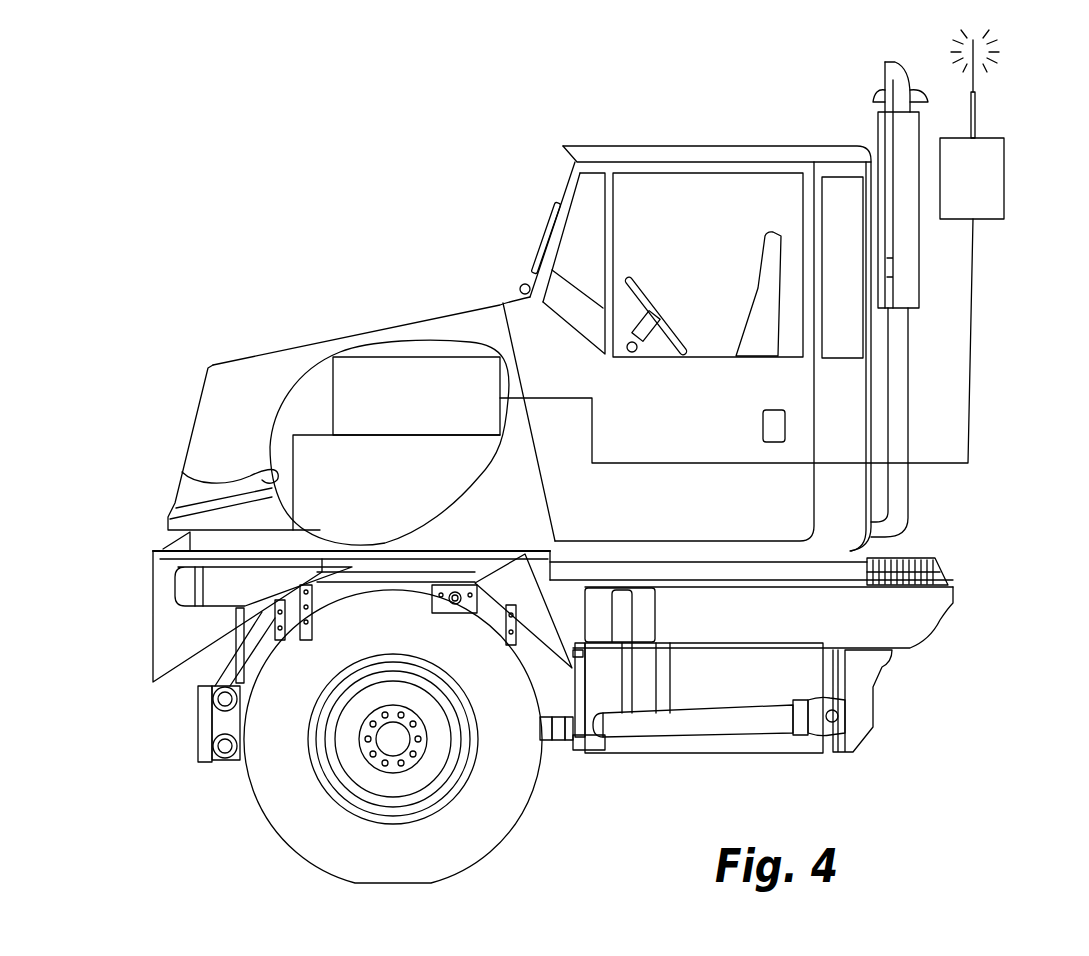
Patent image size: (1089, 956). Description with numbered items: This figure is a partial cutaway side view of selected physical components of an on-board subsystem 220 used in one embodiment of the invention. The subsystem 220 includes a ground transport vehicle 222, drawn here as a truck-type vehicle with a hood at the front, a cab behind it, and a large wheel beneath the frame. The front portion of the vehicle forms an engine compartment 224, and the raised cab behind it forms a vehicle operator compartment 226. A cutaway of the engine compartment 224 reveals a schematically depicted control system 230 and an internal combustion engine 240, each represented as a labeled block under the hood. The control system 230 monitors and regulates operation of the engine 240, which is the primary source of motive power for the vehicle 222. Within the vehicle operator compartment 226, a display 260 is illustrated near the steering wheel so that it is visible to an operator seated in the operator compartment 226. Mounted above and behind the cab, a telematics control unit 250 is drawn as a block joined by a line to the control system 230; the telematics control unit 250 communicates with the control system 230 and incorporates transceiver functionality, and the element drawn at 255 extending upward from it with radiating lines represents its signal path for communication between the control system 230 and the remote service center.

The on-board subsystem 220 is at (250, 251).
The ground transport vehicle 222 is at (226, 356).
The engine compartment 224 is at (182, 472).
The vehicle operator compartment 226 is at (697, 176).
The control system 230 is at (434, 420).
The internal combustion engine 240 is at (402, 524).
The telematics control unit (TCU) 250 is at (990, 210).
The antenna 255 is at (978, 118).
The display 260 is at (634, 352).